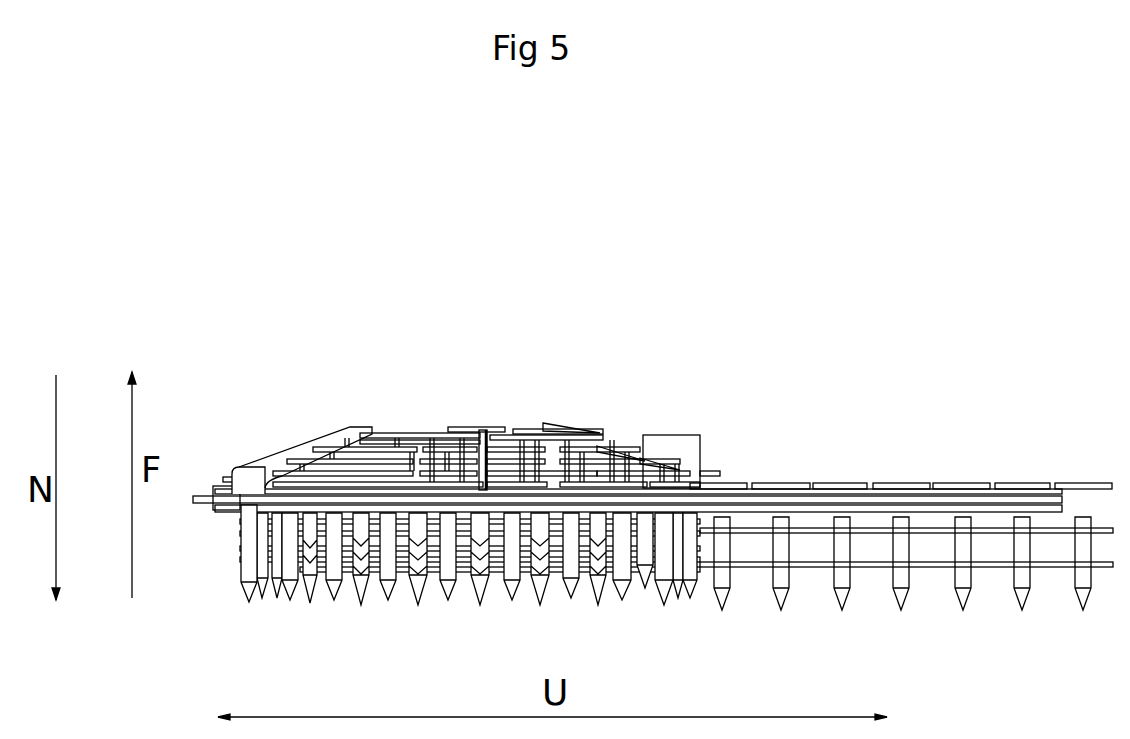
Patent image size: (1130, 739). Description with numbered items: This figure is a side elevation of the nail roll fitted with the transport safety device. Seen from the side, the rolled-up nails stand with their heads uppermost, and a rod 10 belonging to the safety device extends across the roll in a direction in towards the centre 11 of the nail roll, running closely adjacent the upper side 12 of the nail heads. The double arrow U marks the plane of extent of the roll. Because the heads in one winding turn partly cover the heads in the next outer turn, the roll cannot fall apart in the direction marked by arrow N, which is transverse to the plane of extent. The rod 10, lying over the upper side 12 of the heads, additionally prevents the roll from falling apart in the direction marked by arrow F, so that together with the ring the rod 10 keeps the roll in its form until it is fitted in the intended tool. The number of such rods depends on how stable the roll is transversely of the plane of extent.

The rod 10 is at (298, 447).
The centre of the nail roll 11 is at (470, 402).
The upper side of the heads 12 is at (393, 432).